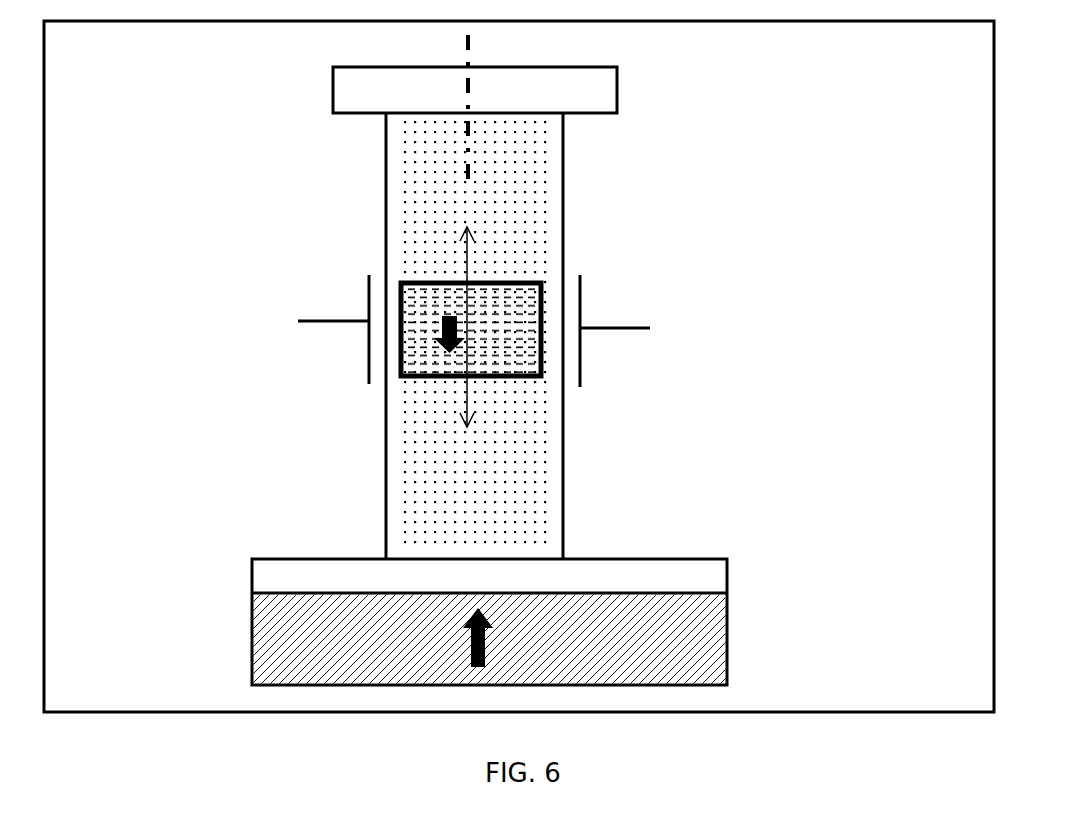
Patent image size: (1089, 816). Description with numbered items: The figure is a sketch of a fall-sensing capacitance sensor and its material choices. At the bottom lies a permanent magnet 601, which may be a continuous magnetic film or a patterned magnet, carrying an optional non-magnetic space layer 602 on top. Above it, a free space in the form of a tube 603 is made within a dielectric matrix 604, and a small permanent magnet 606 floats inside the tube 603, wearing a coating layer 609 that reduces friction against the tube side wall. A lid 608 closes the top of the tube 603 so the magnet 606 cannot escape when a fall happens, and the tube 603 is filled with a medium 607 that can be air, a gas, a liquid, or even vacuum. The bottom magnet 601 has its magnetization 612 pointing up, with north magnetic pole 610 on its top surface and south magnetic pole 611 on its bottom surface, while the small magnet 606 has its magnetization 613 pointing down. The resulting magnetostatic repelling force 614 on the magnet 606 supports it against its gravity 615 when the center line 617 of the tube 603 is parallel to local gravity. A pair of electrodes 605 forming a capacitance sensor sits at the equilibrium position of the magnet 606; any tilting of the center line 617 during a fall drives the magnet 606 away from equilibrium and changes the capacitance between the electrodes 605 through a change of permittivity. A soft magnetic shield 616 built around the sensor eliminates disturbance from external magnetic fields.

The bottom permanent magnet 601 is at (287, 660).
The non-magnetic space layer 602 is at (325, 580).
The tube 603 is at (567, 468).
The dielectric matrix 604 is at (667, 372).
The pair of electrodes 605 is at (362, 317).
The small permanent magnet 606 is at (503, 325).
The medium 607 is at (523, 177).
The lid 608 is at (578, 90).
The coating layer 609 is at (400, 282).
The north magnetic pole 610 is at (643, 615).
The south magnetic pole 611 is at (635, 668).
The magnetization 612 is at (422, 600).
The magnetization 613 is at (442, 328).
The magnetostatic repelling force 614 is at (463, 242).
The gravity 615 is at (463, 413).
The soft magnetic shield 616 is at (994, 462).
The center line 617 is at (463, 152).